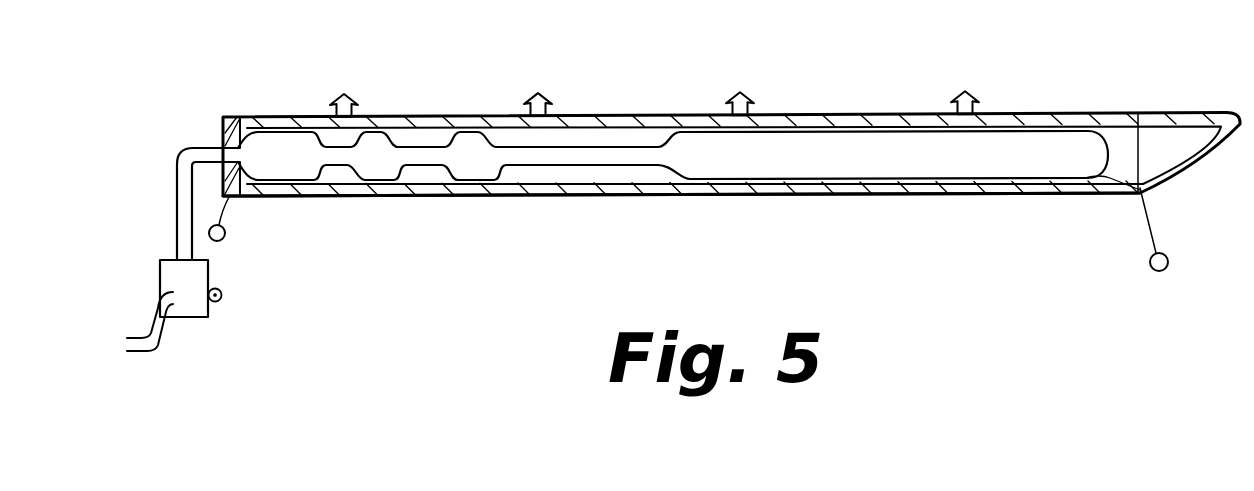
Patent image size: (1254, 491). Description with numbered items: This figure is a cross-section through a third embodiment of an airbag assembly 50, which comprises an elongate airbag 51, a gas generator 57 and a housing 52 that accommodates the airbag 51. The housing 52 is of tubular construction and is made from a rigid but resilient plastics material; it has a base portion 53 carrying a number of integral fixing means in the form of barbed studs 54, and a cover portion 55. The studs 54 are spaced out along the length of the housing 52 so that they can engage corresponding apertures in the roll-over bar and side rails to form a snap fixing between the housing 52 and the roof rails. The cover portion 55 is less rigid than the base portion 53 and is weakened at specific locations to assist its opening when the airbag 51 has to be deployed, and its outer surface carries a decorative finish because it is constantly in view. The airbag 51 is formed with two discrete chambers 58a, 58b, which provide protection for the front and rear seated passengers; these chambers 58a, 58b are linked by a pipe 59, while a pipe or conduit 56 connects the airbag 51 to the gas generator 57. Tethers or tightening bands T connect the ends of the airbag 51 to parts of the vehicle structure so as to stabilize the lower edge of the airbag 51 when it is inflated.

The airbag assembly 50 is at (731, 105).
The airbag 51 is at (494, 198).
The housing 52 is at (681, 233).
The base portion 53 is at (734, 107).
The barbed studs 54 is at (669, 71).
The cover portion 55 is at (695, 230).
The pipe or conduit 56 is at (166, 200).
The gas generator 57 is at (221, 305).
The first chamber 58a is at (419, 105).
The second chamber 58b is at (899, 107).
The pipe 59 is at (650, 94).
The tethers or tightening bands T is at (225, 226).